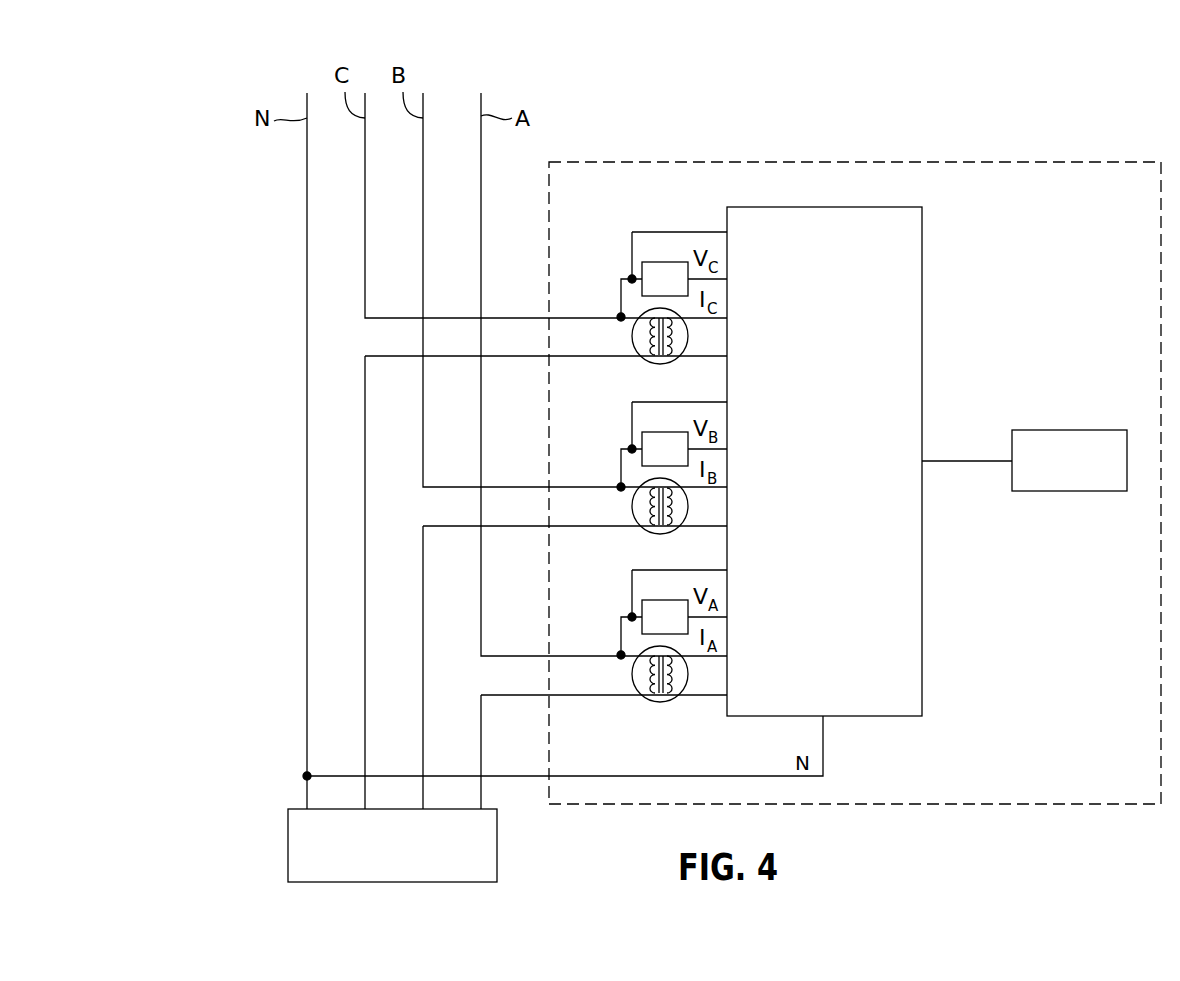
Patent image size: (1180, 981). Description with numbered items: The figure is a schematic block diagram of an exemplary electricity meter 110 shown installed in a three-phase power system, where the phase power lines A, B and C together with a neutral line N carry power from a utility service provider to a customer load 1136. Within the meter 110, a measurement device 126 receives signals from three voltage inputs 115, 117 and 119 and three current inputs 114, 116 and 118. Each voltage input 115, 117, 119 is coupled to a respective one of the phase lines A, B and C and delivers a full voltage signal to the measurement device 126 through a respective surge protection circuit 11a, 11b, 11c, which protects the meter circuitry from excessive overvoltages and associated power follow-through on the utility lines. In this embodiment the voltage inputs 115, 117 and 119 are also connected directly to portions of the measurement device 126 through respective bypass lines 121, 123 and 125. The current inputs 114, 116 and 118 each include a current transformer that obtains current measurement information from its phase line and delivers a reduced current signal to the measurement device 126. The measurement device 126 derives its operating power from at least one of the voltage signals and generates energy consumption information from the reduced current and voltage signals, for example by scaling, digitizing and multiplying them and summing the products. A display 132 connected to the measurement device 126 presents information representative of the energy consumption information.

The electricity meter 110 is at (856, 162).
The measurement device 126 is at (922, 308).
The display 132 is at (1068, 430).
The customer load 1136 is at (288, 845).
The bypass line 125 is at (676, 232).
The bypass line 123 is at (662, 412).
The bypass line 121 is at (662, 580).
The surge protection device 11c is at (662, 261).
The surge protection device 11b is at (648, 435).
The surge protection device 11a is at (648, 603).
The voltage input 119 is at (618, 316).
The voltage input 117 is at (600, 464).
The voltage input 115 is at (600, 632).
The current input 118 is at (631, 334).
The current input 116 is at (624, 506).
The current input 114 is at (624, 674).